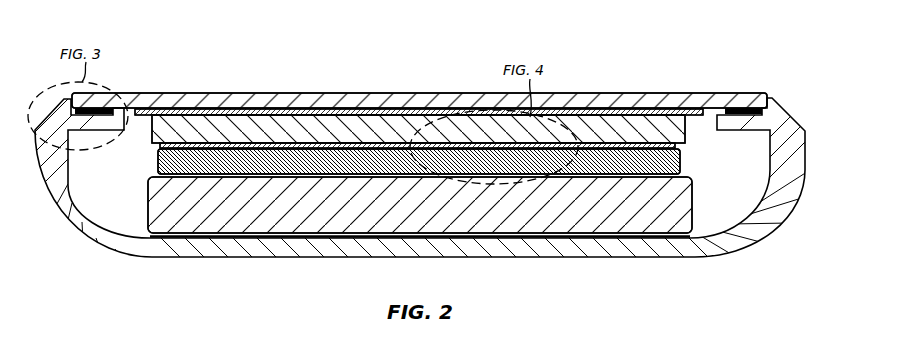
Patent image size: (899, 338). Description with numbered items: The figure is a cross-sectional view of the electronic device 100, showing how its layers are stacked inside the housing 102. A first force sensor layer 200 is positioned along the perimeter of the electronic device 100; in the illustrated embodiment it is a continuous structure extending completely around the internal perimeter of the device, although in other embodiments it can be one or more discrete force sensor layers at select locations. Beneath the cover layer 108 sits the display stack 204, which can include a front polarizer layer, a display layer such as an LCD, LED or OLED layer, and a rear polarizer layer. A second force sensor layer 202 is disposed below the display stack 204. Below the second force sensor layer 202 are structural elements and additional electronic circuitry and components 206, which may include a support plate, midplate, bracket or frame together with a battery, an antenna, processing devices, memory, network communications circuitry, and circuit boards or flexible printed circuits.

The electronic device 100 is at (306, 72).
The housing 102 is at (788, 110).
The cover layer 108 is at (406, 92).
The first force sensor layer 200 is at (745, 107).
The second force sensor layer 202 is at (683, 158).
The display stack 204 is at (688, 134).
The structural elements and additional electronic circuitry and components 206 is at (695, 200).